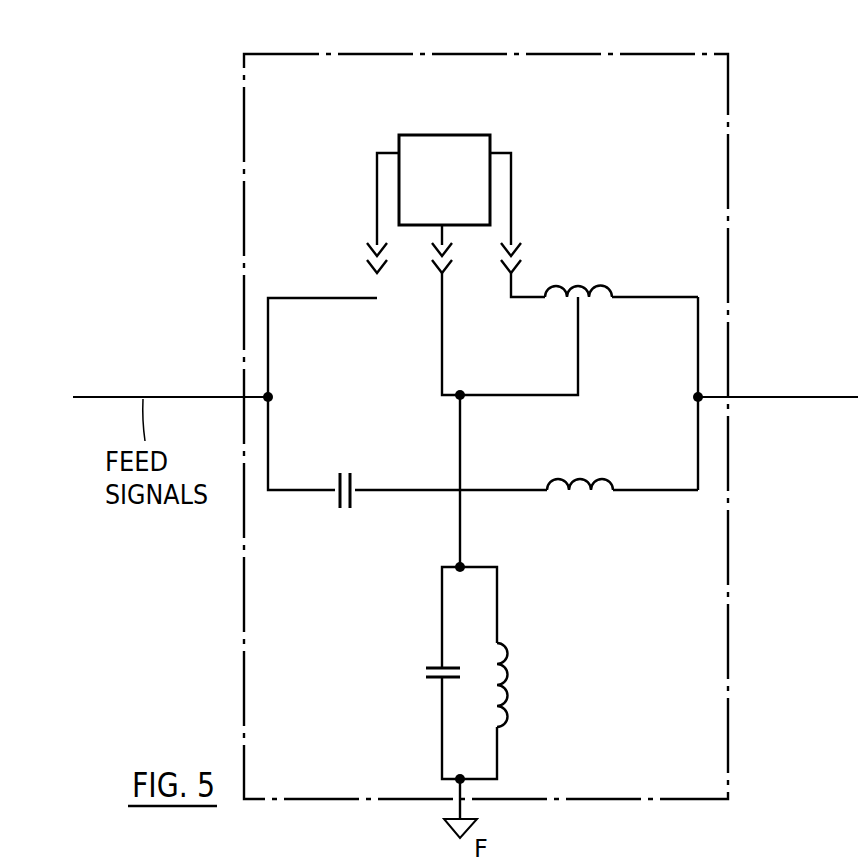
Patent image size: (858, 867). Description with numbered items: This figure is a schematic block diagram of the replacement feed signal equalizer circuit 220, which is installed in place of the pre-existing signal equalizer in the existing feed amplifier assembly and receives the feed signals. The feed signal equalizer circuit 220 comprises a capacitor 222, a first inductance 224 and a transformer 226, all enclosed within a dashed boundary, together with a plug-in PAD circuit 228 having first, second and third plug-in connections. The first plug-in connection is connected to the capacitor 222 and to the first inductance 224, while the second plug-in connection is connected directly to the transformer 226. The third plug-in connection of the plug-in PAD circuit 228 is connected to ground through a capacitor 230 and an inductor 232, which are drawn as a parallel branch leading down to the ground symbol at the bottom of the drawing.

The feed signal equalizer circuit 220 is at (729, 198).
The capacitor 222 is at (340, 502).
The first inductance 224 is at (583, 492).
The transformer 226 is at (596, 296).
The plug-in PAD circuit 228 is at (452, 132).
The capacitor 230 is at (437, 680).
The inductor 232 is at (500, 645).